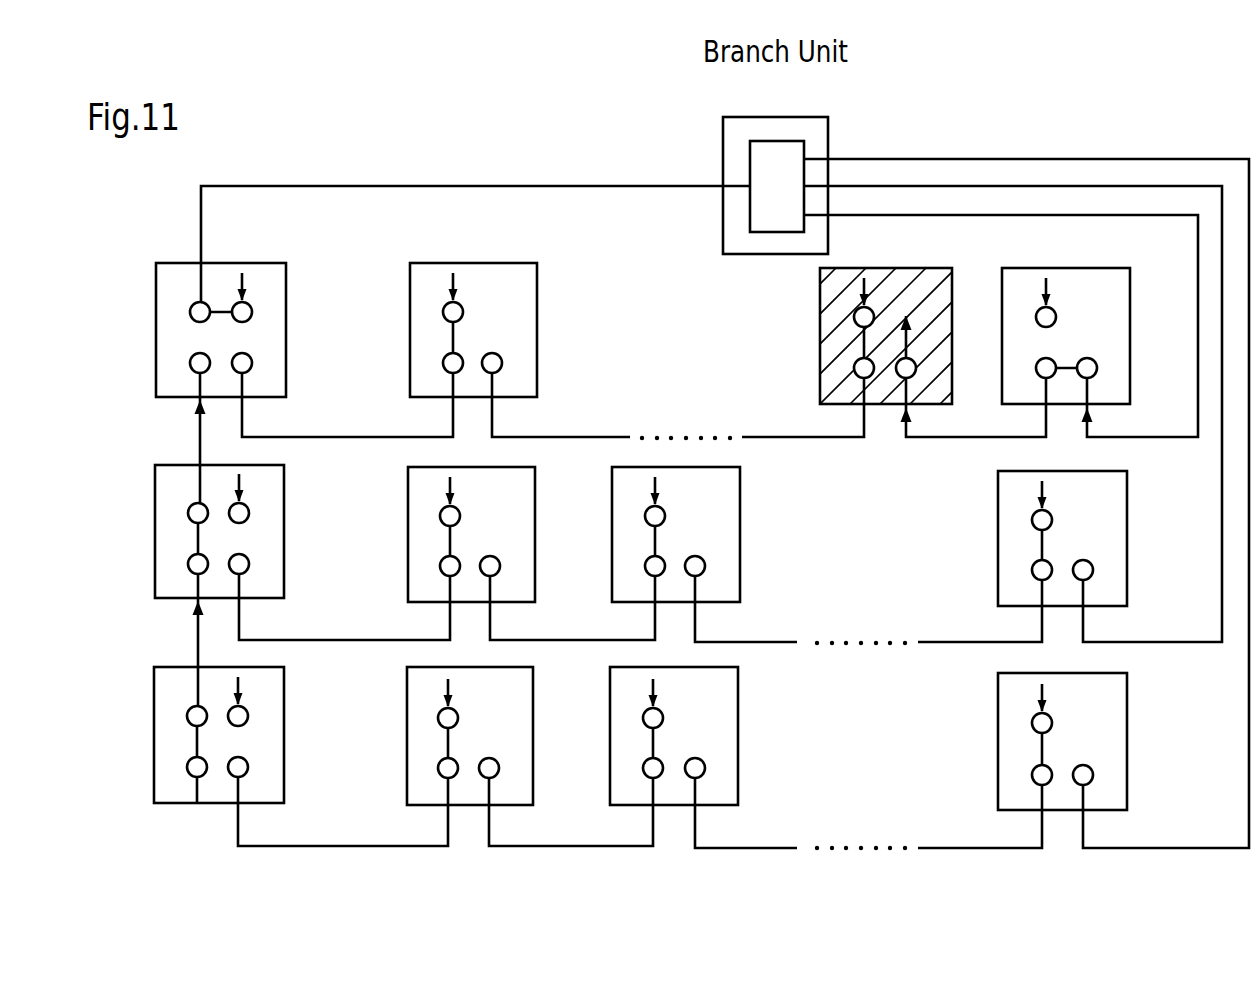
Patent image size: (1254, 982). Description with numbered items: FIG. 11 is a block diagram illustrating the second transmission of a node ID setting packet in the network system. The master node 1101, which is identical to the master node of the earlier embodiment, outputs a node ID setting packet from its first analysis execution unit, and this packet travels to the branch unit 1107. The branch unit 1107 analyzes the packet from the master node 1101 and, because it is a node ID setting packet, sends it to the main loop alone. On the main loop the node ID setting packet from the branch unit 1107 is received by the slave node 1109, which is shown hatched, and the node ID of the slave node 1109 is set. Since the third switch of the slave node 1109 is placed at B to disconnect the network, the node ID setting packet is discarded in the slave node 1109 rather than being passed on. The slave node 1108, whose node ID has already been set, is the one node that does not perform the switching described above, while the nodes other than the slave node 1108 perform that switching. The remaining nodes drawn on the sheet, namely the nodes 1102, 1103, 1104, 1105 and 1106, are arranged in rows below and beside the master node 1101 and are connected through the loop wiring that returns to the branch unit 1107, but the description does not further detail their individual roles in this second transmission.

The master node 1101 is at (287, 282).
The second node unit of first row 1102 is at (538, 297).
The first node unit of second row 1103 is at (284, 484).
The node units of second row 1104 is at (611, 512).
The first node unit of third row 1105 is at (284, 692).
The node units of third row 1106 is at (611, 717).
The branch unit 1107 is at (723, 157).
The slave node 1108 is at (1131, 297).
The slave node 1109 is at (820, 310).